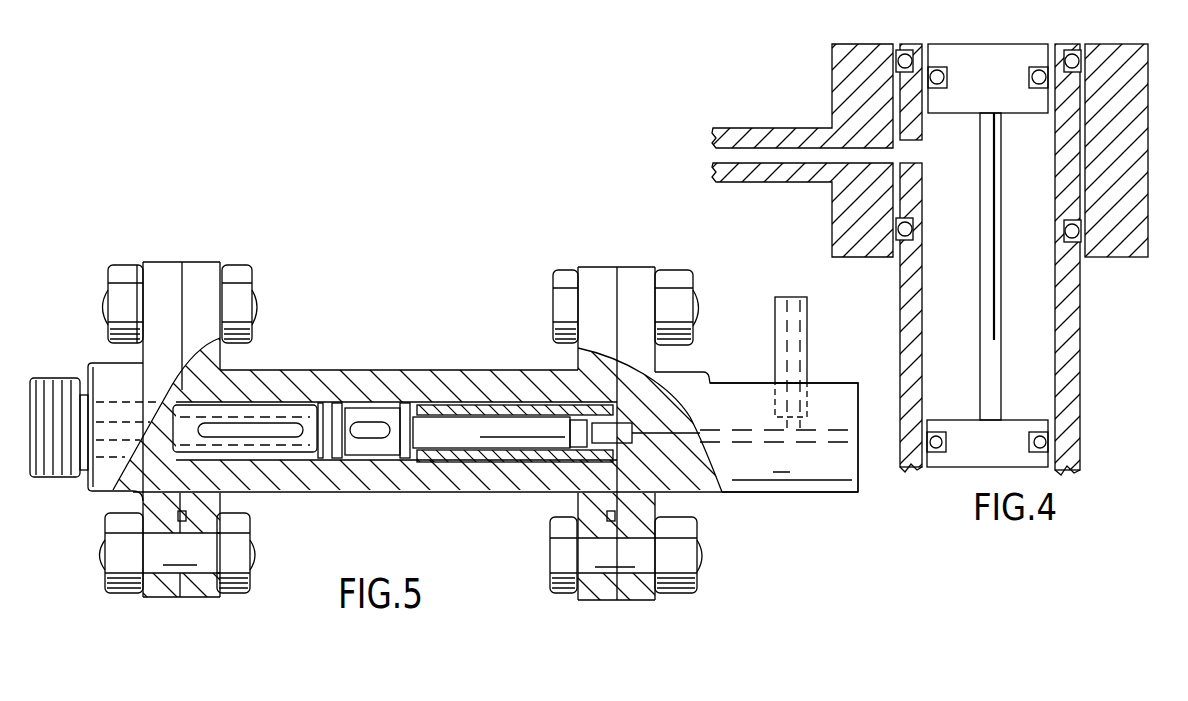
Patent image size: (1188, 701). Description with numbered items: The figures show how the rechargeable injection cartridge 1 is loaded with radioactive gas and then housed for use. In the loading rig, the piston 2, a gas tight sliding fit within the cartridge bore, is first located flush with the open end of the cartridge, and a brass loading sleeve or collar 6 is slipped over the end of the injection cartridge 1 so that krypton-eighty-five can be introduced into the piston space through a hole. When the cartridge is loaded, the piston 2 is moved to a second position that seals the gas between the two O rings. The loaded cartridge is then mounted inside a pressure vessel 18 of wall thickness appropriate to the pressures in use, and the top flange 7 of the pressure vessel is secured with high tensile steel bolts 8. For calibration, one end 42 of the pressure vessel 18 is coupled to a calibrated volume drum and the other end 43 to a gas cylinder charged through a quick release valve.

In FIG. 5, the rechargeable injection cartridge 1 is at (331, 462).
In FIG. 4, the rechargeable injection cartridge 1 is at (1070, 322).
In FIG. 5, the piston 2 is at (468, 432).
In FIG. 4, the piston 2 is at (1006, 45).
In FIG. 4, the brass loading sleeve or collar 6 is at (1122, 55).
In FIG. 5, the top flange 7 is at (750, 380).
In FIG. 5, the high tensile steel bolts 8 is at (683, 280).
In FIG. 5, the pressure vessel 18 is at (383, 355).
In FIG. 5, the one end of the pressure vessel 42 is at (60, 378).
In FIG. 5, the other end of the pressure vessel 43 is at (864, 385).